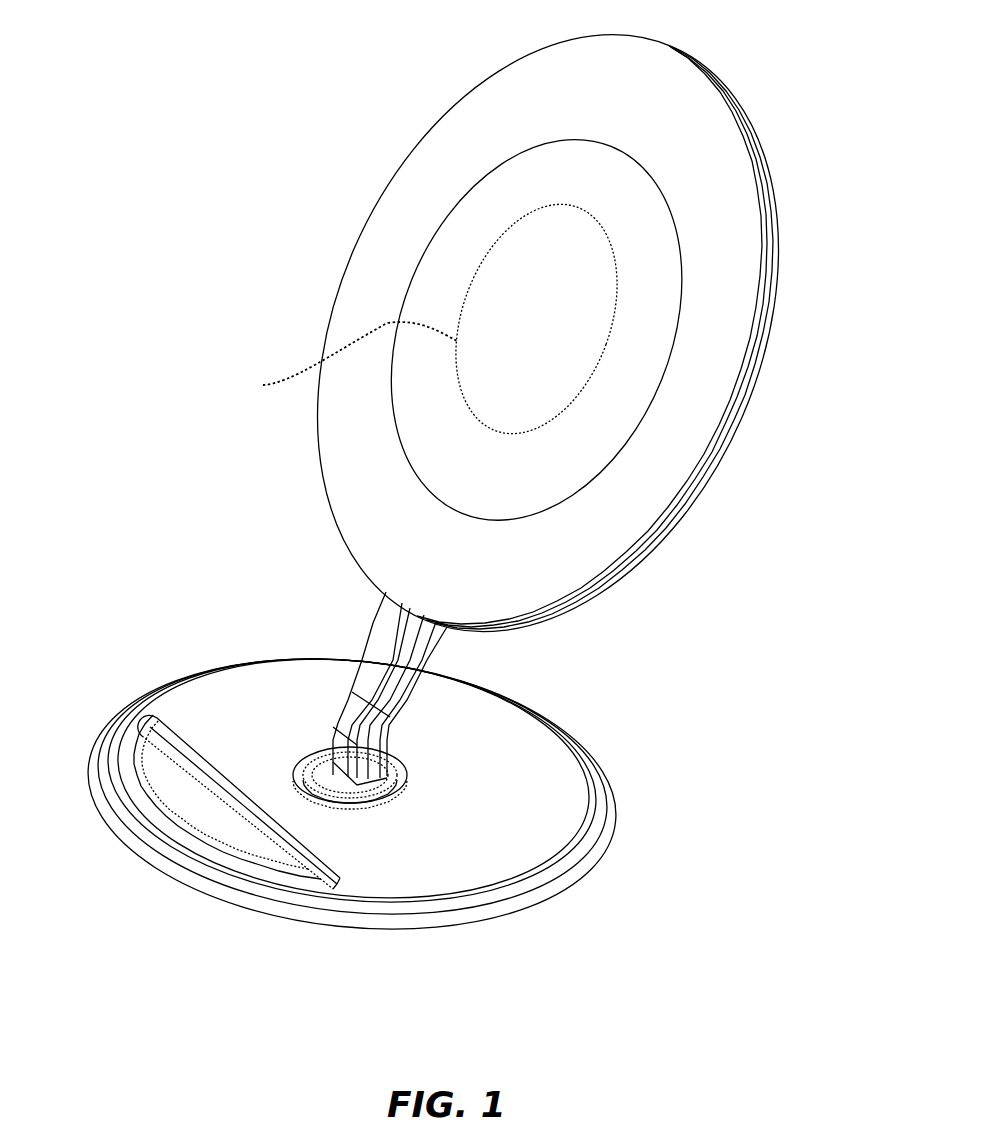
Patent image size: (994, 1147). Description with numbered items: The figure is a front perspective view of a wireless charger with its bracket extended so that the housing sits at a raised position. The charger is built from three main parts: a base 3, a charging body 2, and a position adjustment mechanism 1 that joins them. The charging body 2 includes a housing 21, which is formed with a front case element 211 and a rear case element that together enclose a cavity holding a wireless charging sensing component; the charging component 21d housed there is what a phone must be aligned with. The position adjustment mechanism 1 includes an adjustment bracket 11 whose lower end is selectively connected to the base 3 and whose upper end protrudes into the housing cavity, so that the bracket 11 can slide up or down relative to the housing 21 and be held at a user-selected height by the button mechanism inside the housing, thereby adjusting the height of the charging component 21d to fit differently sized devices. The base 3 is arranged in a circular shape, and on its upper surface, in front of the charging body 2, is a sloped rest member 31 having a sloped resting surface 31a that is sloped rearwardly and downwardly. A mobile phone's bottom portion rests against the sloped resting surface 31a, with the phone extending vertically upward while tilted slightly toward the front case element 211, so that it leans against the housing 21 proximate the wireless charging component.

The position adjustment mechanism 1 is at (360, 105).
The charging body 2 is at (677, 523).
The housing 21 is at (642, 572).
The front case element 211 is at (393, 257).
The charging component 21d is at (263, 385).
The adjustment bracket 11 is at (400, 640).
The base 3 is at (540, 843).
The sloped rest member 31 is at (203, 803).
The sloped resting surface 31a is at (207, 762).